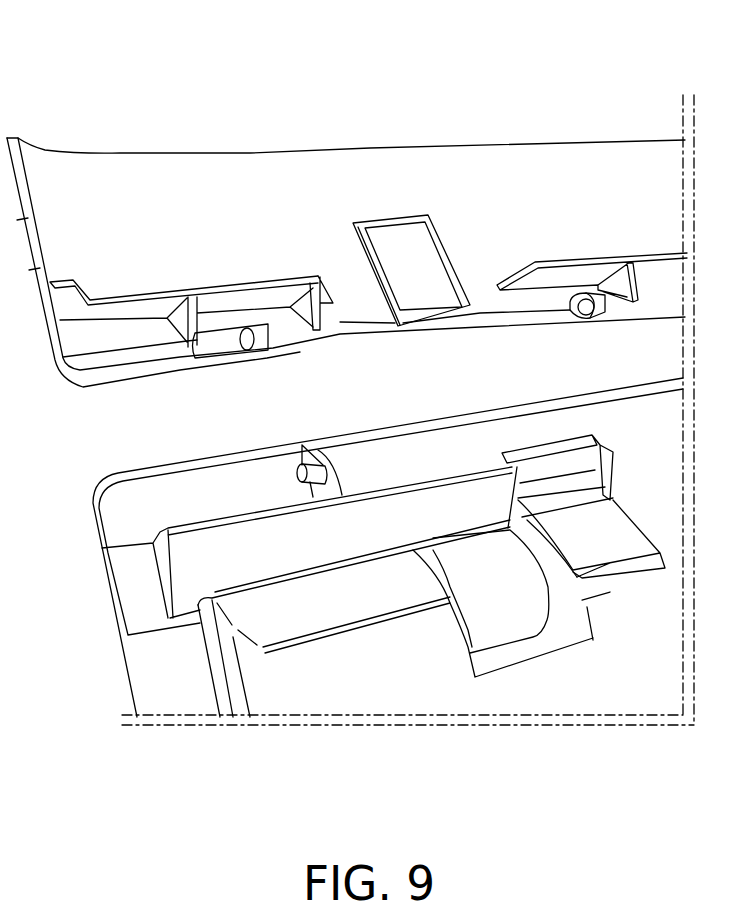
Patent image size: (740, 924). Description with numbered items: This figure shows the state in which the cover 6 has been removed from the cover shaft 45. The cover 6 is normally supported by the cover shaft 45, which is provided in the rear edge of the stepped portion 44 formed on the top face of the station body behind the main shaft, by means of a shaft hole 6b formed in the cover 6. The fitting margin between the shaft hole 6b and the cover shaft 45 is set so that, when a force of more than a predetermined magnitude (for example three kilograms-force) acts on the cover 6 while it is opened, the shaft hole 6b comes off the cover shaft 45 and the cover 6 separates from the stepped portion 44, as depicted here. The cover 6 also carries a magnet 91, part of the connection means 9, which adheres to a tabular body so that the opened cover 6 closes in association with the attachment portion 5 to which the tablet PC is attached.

The cover 6 is at (245, 152).
The connection means 9 is at (411, 190).
The magnet 91 is at (398, 240).
The shaft hole 6b is at (277, 343).
The stepped portion 44 is at (113, 517).
The cover shaft 45 is at (330, 440).
The attachment portion 5 is at (280, 672).